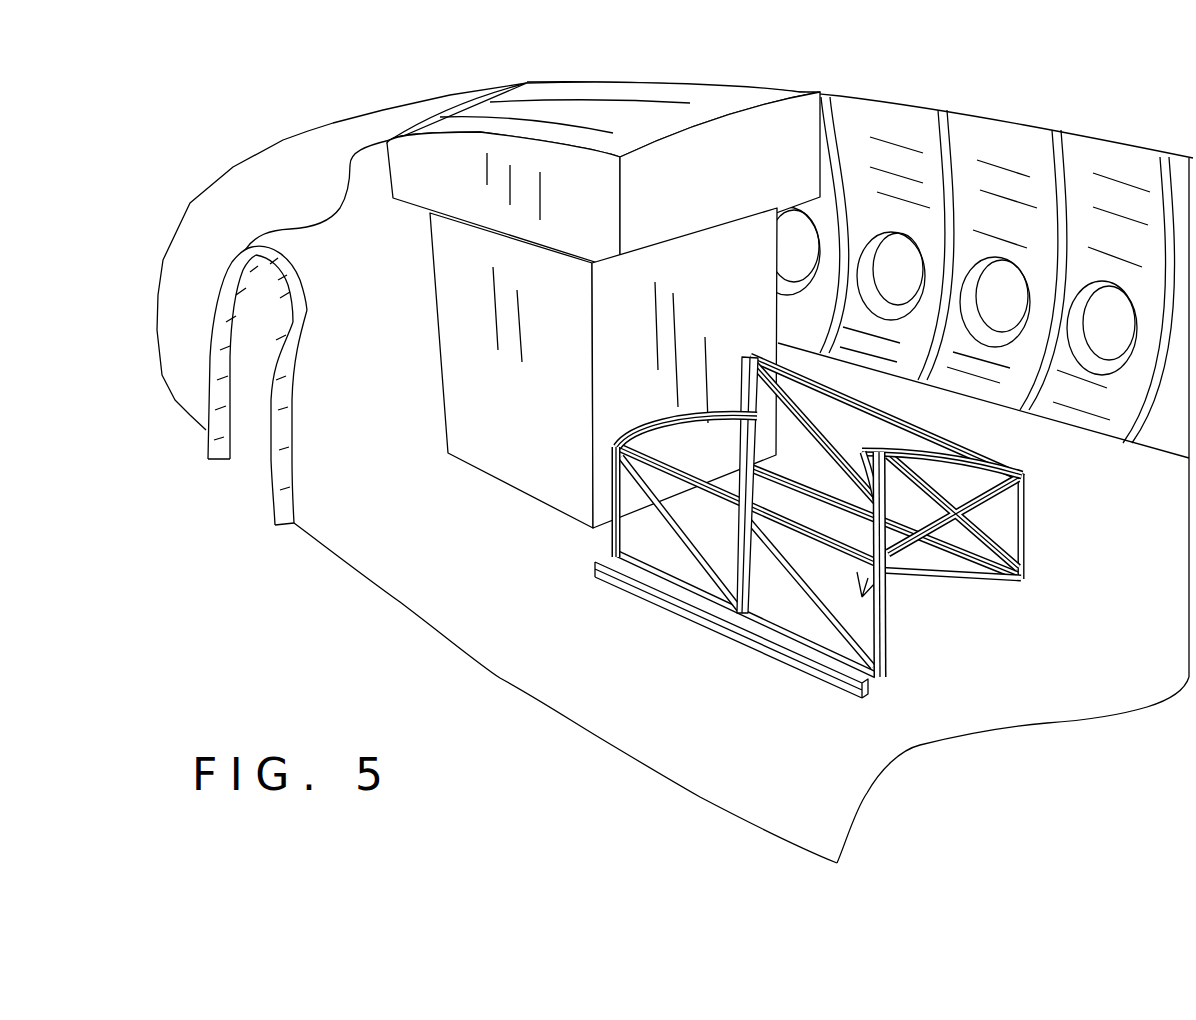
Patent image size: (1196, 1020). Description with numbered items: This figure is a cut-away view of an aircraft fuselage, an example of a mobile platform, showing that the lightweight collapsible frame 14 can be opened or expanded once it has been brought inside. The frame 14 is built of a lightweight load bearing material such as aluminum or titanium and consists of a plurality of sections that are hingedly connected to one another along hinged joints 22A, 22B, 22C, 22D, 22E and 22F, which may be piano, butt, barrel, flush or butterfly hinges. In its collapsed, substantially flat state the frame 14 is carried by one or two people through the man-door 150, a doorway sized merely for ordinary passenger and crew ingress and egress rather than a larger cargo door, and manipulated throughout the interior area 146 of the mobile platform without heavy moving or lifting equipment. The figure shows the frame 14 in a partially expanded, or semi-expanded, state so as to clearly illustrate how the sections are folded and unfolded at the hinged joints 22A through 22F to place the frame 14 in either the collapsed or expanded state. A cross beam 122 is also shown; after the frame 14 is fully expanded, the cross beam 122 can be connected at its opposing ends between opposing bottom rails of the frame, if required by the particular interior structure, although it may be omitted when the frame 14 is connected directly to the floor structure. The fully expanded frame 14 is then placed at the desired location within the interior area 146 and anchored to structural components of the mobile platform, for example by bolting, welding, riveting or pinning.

The collapsible frame 14 is at (913, 425).
The joint 22A is at (886, 643).
The joint 22B is at (896, 527).
The joint 22C is at (1022, 527).
The joint 22D is at (744, 357).
The joint 22E is at (735, 527).
The joint 22F is at (610, 493).
The cross beam 122 is at (762, 648).
The interior area 146 is at (534, 560).
The man-door 150 is at (293, 270).